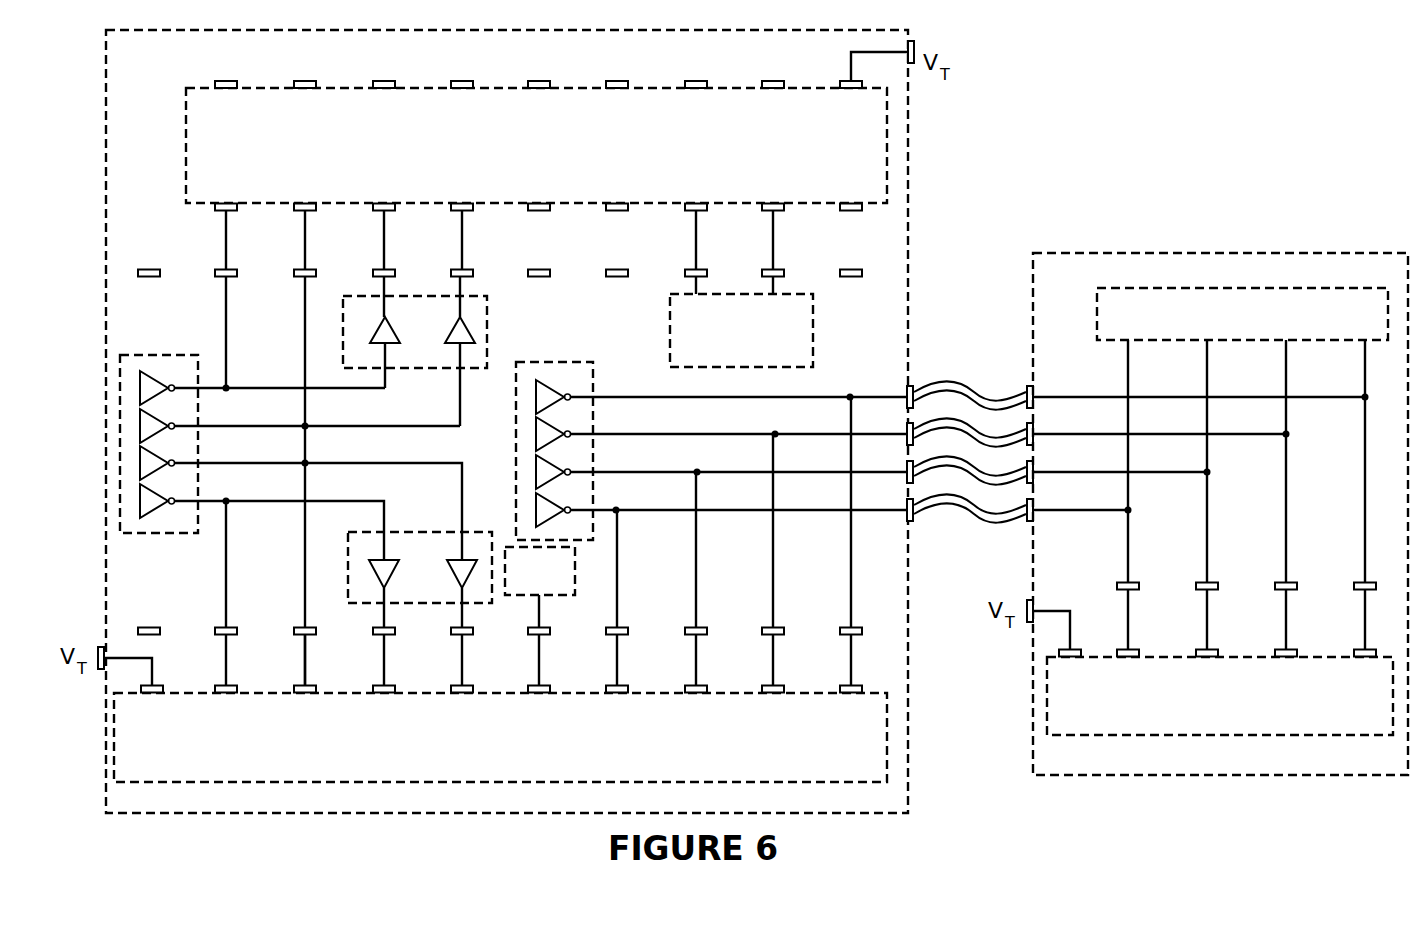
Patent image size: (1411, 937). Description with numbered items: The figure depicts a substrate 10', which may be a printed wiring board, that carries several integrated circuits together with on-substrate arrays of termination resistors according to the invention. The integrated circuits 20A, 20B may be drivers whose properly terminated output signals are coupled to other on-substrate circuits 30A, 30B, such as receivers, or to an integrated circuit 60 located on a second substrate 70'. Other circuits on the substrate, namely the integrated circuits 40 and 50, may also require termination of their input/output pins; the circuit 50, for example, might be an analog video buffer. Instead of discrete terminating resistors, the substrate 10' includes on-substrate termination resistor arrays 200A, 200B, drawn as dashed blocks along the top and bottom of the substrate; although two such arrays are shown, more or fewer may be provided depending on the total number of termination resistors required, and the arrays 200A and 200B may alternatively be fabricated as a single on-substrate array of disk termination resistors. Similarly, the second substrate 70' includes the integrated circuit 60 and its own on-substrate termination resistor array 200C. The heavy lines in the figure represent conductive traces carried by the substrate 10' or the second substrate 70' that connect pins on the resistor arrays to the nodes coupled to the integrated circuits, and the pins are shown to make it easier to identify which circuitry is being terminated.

The substrate 10' is at (483, 421).
The integrated circuit 20A is at (158, 355).
The integrated circuit 20B is at (516, 476).
The integrated circuit 30A is at (487, 313).
The integrated circuit 30B is at (397, 540).
The integrated circuit 40 is at (757, 343).
The integrated circuit 50 is at (554, 581).
The integrated circuit 60 is at (1253, 323).
The second substrate 70' is at (1220, 492).
The termination resistor array 200A is at (553, 151).
The termination resistor array 200B is at (495, 753).
The termination resistor array 200C is at (1248, 712).